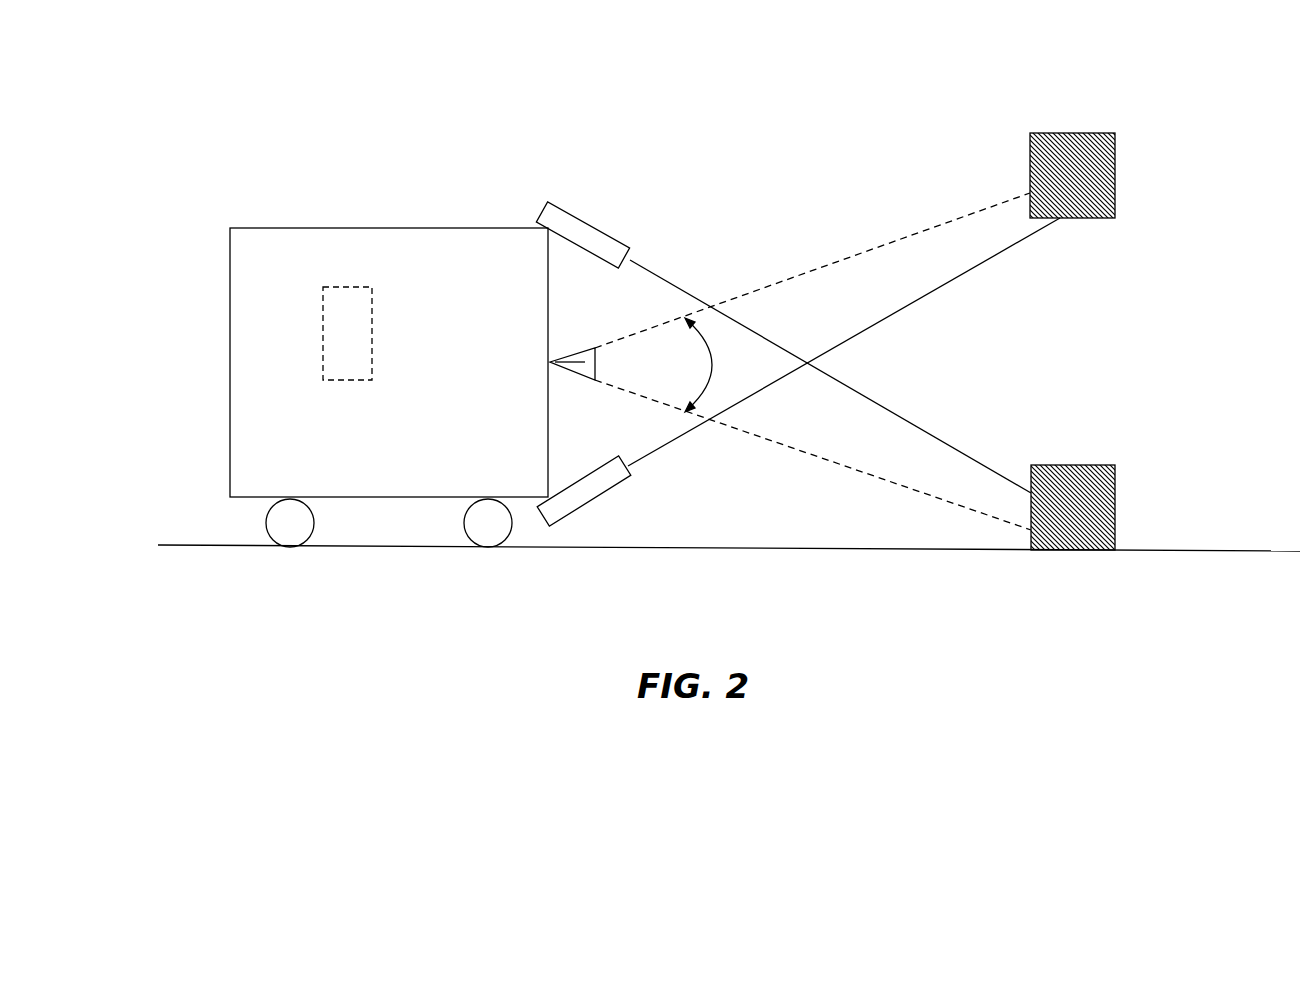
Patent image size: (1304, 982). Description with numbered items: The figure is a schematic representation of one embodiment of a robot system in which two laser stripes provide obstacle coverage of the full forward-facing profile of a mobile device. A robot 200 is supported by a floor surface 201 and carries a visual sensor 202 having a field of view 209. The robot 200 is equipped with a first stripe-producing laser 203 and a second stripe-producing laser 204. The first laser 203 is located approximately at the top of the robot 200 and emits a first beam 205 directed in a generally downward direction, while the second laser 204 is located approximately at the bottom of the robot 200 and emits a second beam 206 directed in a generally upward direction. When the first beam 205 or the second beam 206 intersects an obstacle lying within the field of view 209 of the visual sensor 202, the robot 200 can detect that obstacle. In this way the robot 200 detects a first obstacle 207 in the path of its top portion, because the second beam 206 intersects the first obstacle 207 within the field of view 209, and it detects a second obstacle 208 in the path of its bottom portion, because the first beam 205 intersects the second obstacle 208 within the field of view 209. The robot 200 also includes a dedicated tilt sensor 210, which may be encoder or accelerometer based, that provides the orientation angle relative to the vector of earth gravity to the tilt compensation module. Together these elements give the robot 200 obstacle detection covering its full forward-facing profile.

The robot 200 is at (265, 368).
The floor surface 201 is at (195, 552).
The visual sensor 202 is at (548, 360).
The first stripe-producing laser 203 is at (607, 240).
The second stripe-producing laser 204 is at (583, 497).
The first beam 205 is at (695, 297).
The second beam 206 is at (972, 268).
The first obstacle 207 is at (1087, 153).
The second obstacle 208 is at (1092, 520).
The field of view 209 is at (715, 357).
The tilt sensor 210 is at (347, 340).